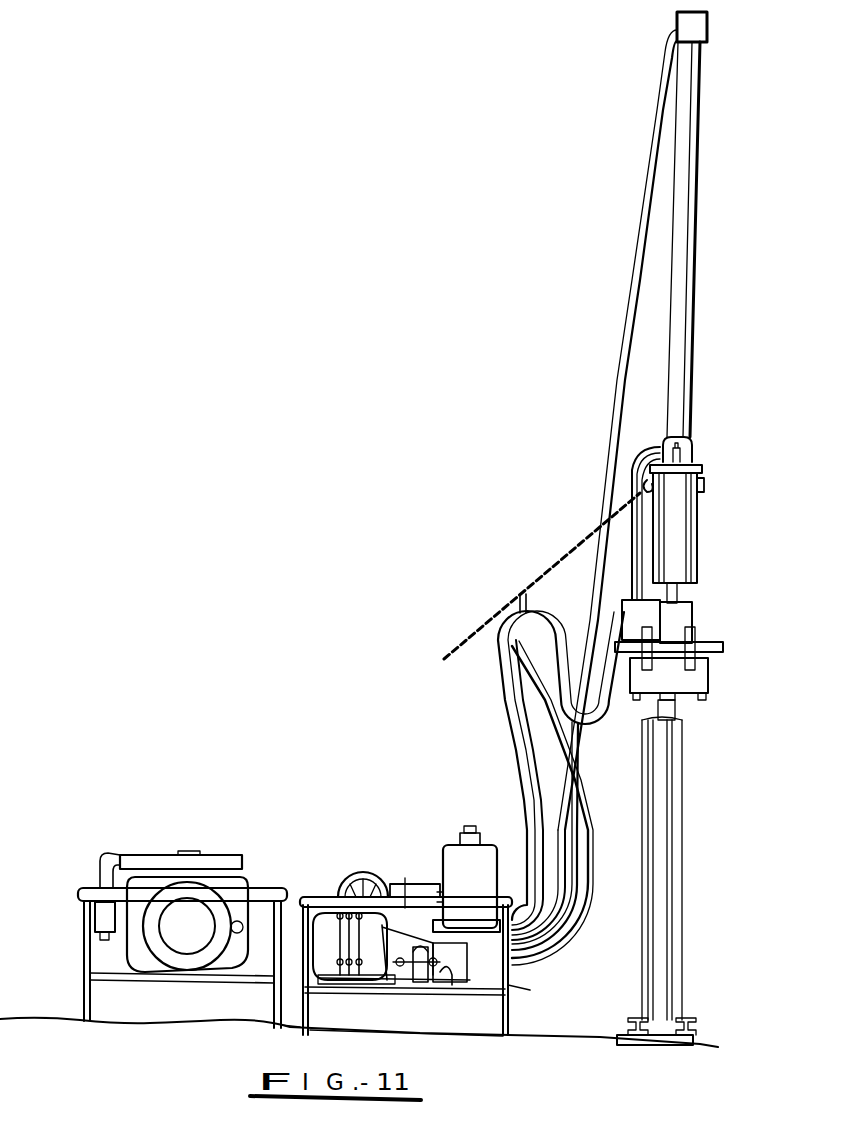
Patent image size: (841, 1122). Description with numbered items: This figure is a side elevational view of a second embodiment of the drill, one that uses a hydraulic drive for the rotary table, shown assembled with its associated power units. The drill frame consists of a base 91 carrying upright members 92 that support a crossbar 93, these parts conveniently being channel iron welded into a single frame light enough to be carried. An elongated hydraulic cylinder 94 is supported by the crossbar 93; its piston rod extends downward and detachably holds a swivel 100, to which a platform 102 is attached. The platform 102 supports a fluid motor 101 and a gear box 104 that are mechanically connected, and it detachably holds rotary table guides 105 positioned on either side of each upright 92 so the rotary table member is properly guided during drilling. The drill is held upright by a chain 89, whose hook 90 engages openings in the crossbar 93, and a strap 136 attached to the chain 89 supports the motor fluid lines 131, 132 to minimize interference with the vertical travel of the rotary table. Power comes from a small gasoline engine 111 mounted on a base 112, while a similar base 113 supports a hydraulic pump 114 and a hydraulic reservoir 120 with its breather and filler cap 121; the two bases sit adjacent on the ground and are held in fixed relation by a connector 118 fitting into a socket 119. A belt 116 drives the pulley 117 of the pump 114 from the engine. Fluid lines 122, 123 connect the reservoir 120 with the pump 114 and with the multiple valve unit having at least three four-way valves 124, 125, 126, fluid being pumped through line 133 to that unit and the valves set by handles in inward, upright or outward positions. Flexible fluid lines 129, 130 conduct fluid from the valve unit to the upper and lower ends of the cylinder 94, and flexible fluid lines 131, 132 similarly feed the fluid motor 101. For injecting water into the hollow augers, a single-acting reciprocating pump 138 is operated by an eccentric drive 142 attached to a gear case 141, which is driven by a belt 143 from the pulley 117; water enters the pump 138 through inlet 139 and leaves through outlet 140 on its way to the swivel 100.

The chain 89 is at (582, 542).
The hook 90 is at (645, 486).
The base 91 is at (686, 1012).
The upright members 92 is at (697, 535).
The crossbar 93 is at (705, 486).
The hydraulic cylinder 94 is at (700, 308).
The swivel 100 is at (694, 606).
The fluid motor 101 is at (622, 610).
The platform 102 is at (723, 650).
The gear box 104 is at (702, 683).
The rotary table guides 105 is at (699, 638).
The gasoline engine 111 is at (250, 862).
The base 112 is at (78, 956).
The base 113 is at (510, 1012).
The hydraulic pump 114 is at (406, 1021).
The belt 116 is at (294, 892).
The pulley 117 is at (310, 905).
The connector 118 is at (270, 1000).
The socket 119 is at (287, 1030).
The hydraulic reservoir 120 is at (498, 826).
The breather and filler cap 121 is at (468, 824).
The fluid line 122 is at (386, 878).
The fluid line 123 is at (432, 880).
The valve 124 is at (340, 980).
The valve 125 is at (349, 980).
The valve 126 is at (359, 980).
The flexible fluid line 129 is at (632, 455).
The flexible fluid line 130 is at (632, 240).
The flexible fluid line 131 is at (588, 812).
The flexible fluid line 132 is at (517, 730).
The line 133 is at (345, 897).
The strap 136 is at (520, 600).
The pump 138 is at (407, 952).
The inlet 139 is at (405, 980).
The outlet 140 is at (452, 985).
The gear case 141 is at (510, 985).
The eccentric drive 142 is at (478, 950).
The belt 143 is at (405, 878).